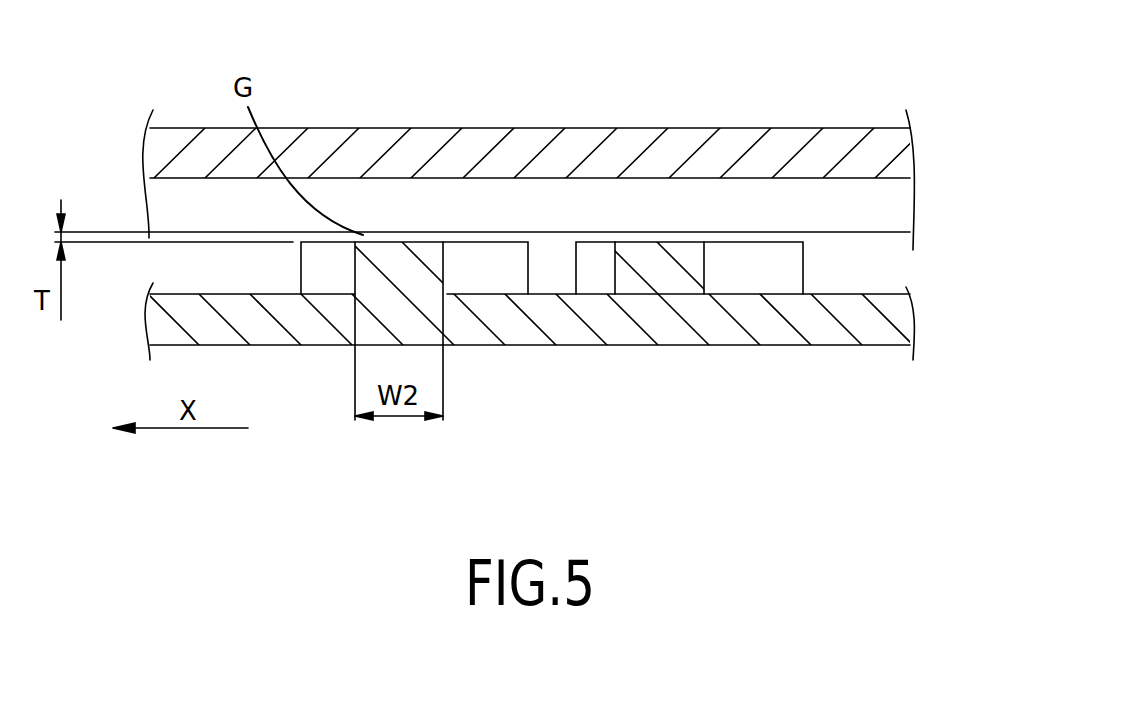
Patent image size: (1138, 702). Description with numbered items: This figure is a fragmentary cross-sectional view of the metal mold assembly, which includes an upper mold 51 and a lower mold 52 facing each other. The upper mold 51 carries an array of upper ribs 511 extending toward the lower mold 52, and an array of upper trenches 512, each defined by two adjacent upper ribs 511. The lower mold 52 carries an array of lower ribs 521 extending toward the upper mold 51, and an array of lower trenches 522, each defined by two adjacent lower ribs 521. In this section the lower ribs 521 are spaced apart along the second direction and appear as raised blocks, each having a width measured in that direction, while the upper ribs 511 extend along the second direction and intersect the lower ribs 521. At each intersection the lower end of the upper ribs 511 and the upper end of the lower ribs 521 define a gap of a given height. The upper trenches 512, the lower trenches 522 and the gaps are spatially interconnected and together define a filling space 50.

The filling space 50 is at (870, 255).
The upper mold 51 is at (915, 158).
The upper ribs 511 is at (897, 210).
The upper trenches 512 is at (579, 212).
The lower mold 52 is at (905, 322).
The lower ribs 521 is at (647, 257).
The lower trenches 522 is at (837, 270).